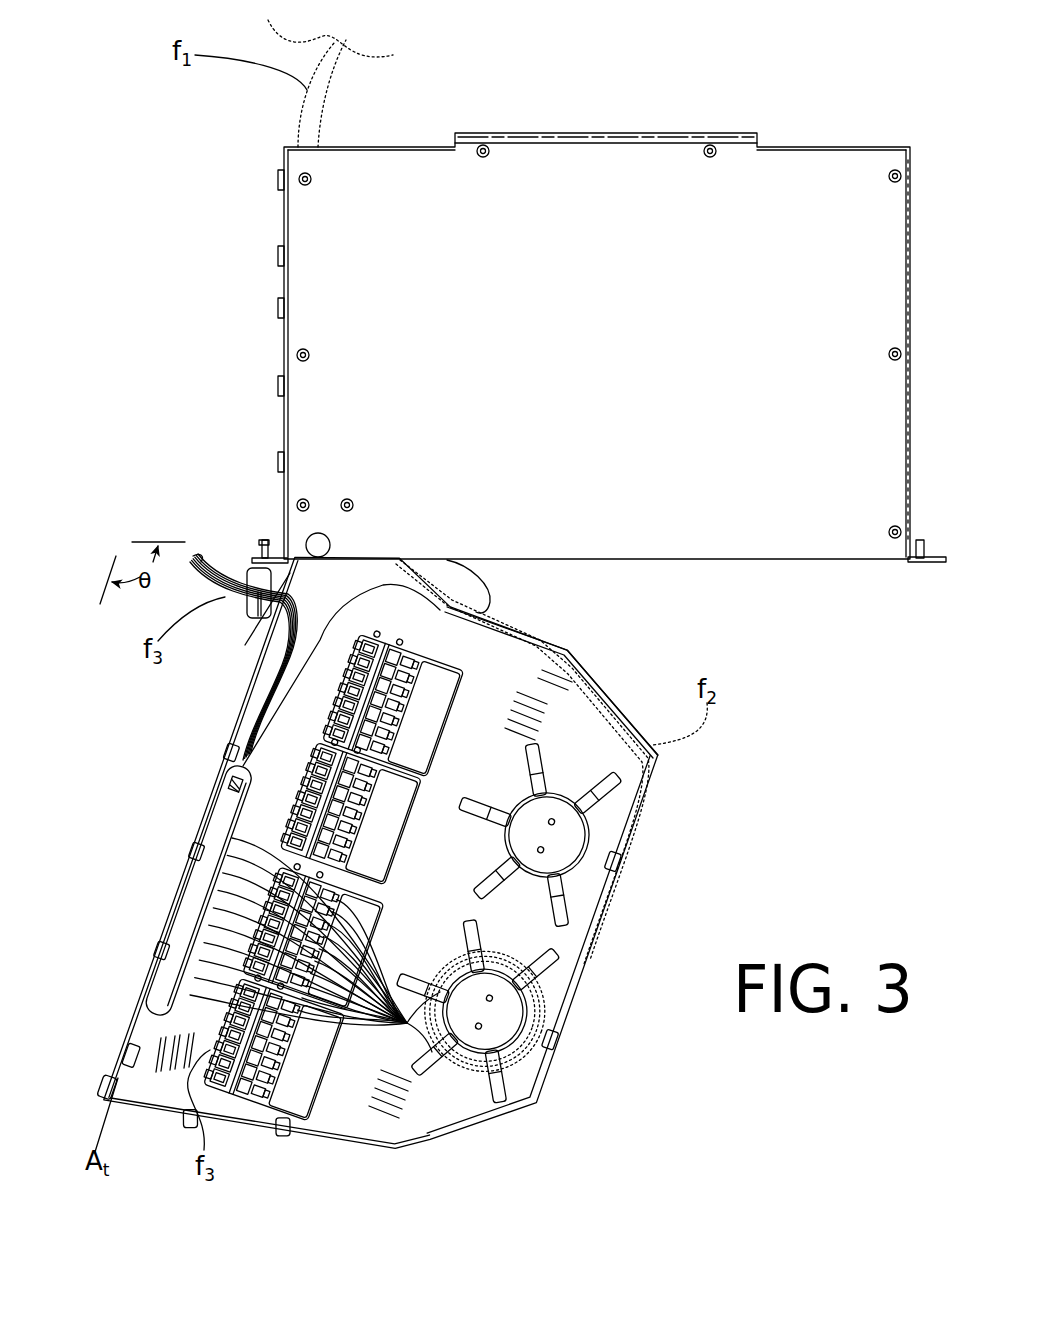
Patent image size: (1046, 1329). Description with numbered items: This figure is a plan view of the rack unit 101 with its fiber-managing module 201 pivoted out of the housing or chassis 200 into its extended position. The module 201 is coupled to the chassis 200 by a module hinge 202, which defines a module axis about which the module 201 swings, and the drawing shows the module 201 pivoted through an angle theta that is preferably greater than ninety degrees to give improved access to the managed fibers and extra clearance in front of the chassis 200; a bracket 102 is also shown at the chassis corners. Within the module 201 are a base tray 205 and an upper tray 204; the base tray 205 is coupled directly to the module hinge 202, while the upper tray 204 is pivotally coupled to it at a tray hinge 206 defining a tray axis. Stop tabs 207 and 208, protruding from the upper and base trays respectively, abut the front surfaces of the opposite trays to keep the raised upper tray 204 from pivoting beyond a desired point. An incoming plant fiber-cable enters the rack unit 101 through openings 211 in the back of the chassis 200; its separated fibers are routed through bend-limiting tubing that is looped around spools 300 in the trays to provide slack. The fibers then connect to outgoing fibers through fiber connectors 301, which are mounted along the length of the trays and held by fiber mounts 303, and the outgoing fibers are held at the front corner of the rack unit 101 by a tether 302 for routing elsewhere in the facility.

The rack unit 101 is at (268, 343).
The mounting bracket 102 is at (275, 530).
The chassis 200 is at (623, 366).
The module 201 is at (182, 867).
The module hinge 202 is at (333, 538).
The upper tray 204 is at (590, 712).
The base tray 205 is at (478, 598).
The tray hinge 206 is at (210, 813).
The stop tab 207 is at (138, 1017).
The stop tab 208 is at (104, 1100).
The openings 211 is at (381, 138).
The spools 300 is at (586, 830).
The fiber connectors 301 is at (258, 1070).
The tether 302 is at (254, 620).
The fiber mounts 303 is at (272, 1100).